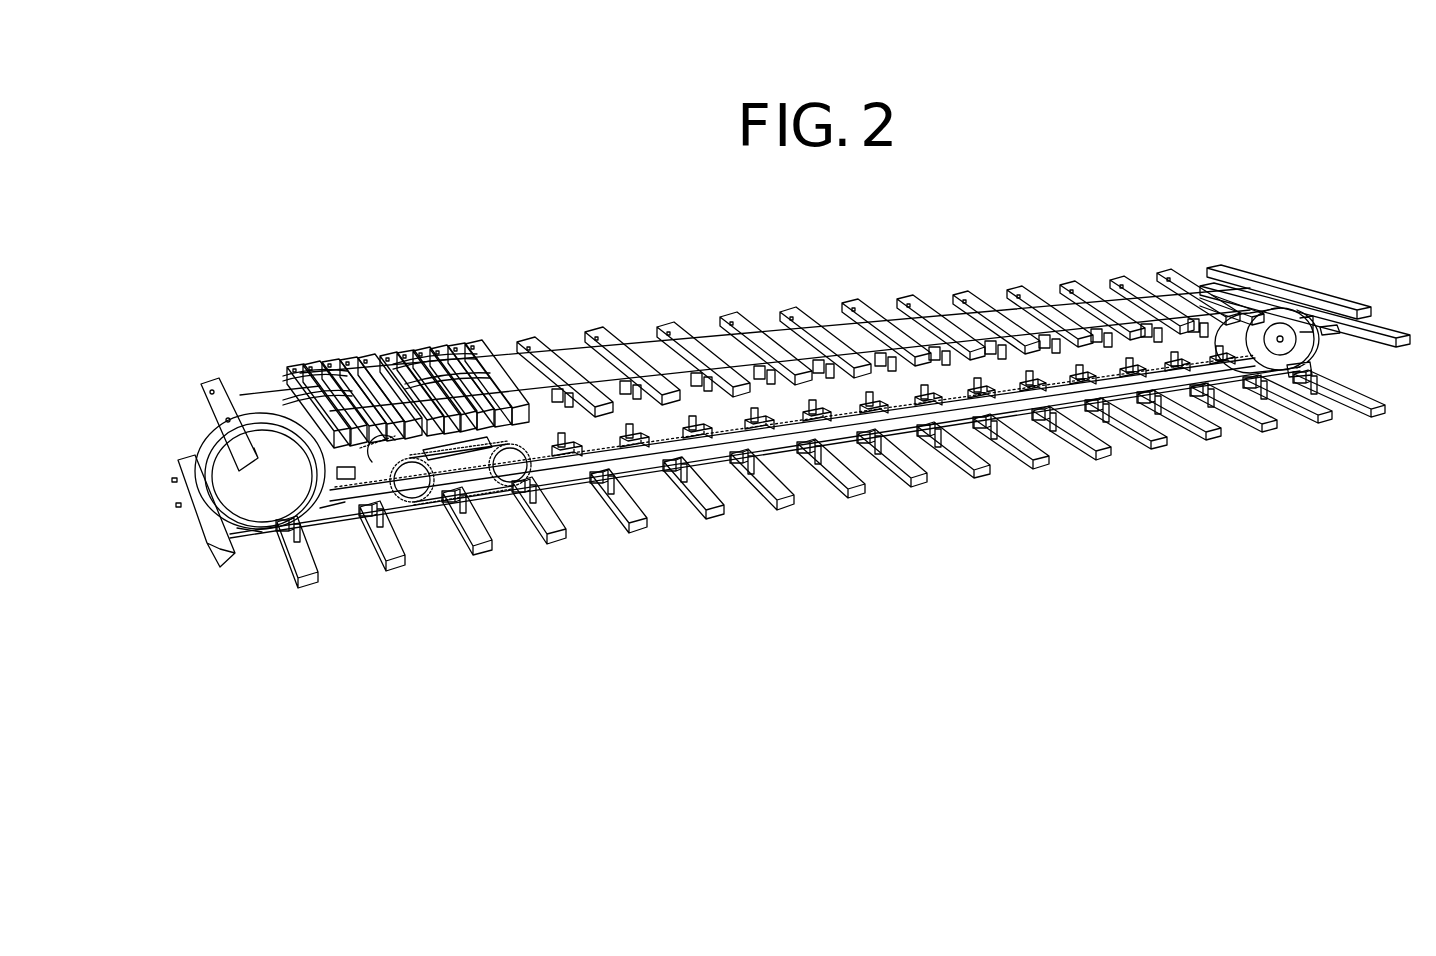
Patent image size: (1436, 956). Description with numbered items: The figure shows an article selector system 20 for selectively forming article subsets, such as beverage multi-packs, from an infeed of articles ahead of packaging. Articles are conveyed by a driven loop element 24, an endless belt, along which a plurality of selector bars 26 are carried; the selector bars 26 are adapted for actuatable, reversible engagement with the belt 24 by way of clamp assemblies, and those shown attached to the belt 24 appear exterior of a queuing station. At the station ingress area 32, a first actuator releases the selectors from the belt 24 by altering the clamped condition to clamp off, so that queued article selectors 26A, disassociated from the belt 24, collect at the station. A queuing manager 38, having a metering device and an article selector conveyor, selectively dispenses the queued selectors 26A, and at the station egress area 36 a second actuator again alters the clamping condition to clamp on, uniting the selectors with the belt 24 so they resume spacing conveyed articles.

The article selector system 20 is at (287, 277).
The driven loop element 24 is at (510, 360).
The selector bars 26 is at (722, 323).
The queued article selectors 26A is at (408, 417).
The station ingress area 32 is at (257, 345).
The station egress area 36 is at (450, 320).
The queuing manager 38 is at (513, 513).